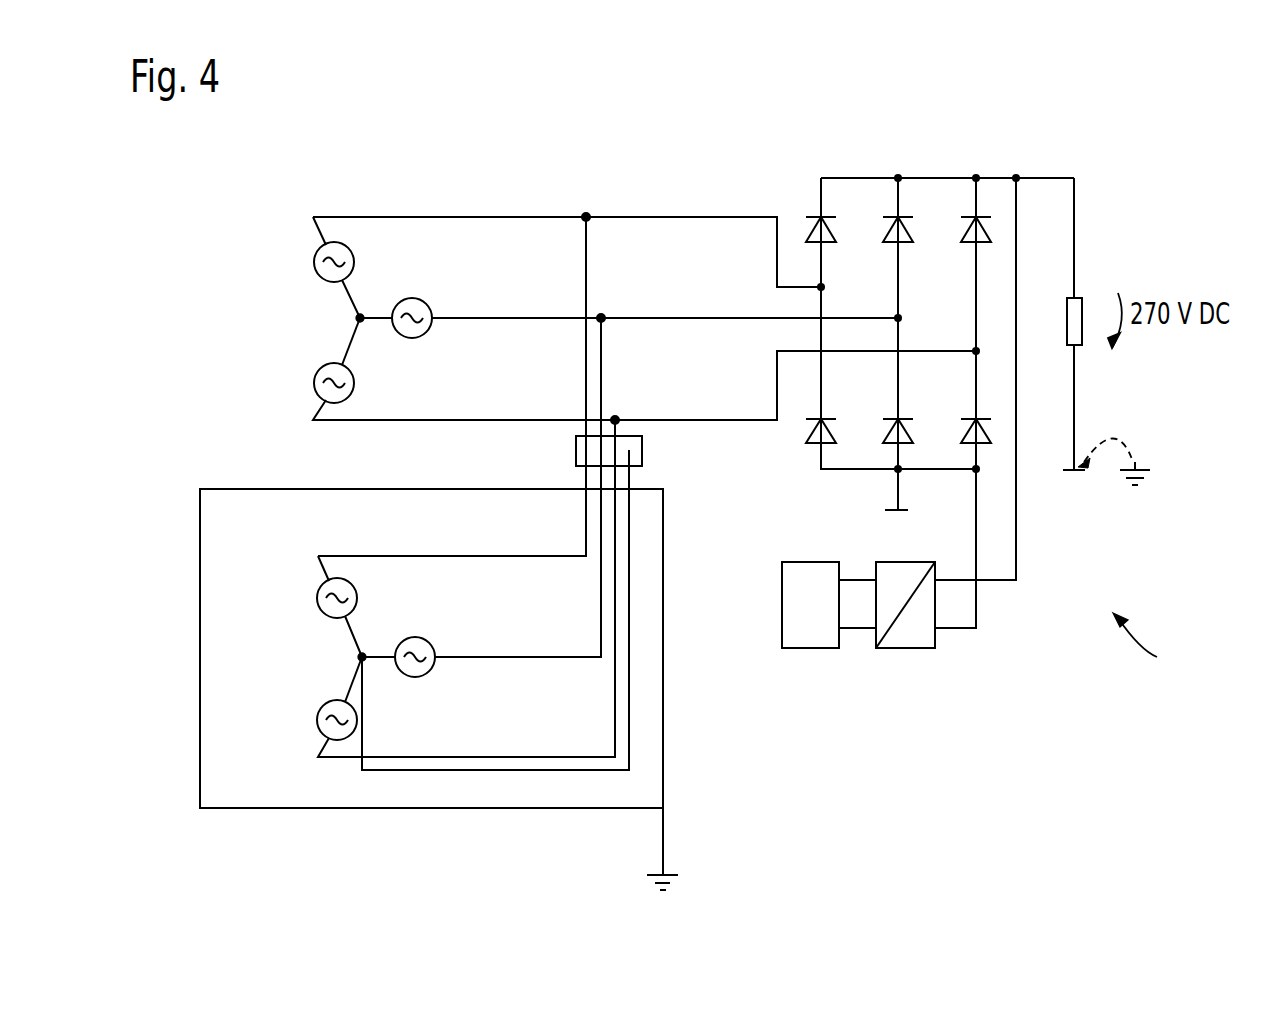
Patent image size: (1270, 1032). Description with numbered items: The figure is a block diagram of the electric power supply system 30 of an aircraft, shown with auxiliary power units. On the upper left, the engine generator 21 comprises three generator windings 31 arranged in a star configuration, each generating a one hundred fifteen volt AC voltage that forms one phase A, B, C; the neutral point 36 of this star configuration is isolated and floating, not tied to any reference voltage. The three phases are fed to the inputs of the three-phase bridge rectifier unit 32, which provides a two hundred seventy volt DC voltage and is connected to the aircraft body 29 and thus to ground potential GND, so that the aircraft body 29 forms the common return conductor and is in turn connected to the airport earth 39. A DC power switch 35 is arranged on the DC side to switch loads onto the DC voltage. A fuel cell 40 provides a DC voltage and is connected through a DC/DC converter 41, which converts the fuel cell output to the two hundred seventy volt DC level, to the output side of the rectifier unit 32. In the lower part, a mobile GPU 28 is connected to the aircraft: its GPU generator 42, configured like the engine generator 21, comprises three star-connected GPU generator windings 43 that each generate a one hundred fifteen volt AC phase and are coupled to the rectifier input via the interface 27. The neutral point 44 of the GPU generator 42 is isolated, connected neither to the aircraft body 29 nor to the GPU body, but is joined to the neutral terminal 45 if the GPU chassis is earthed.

The engine generator 21 is at (335, 242).
The interface 27 is at (645, 451).
The mobile GPU 28 is at (200, 556).
The aircraft body 29 is at (893, 510).
The electric power supply system 30 is at (1150, 644).
The generator windings 31 is at (462, 170).
The rectifier unit 32 is at (990, 161).
The DC power switch 35 is at (1078, 296).
The neutral point 36 is at (356, 318).
The airport earth 39 is at (1143, 466).
The fuel cell 40 is at (808, 650).
The DC/DC converter 41 is at (903, 650).
The GPU generator 42 is at (277, 773).
The GPU generator windings 43 is at (336, 577).
The neutral point 44 is at (358, 657).
The neutral terminal 45 is at (520, 773).